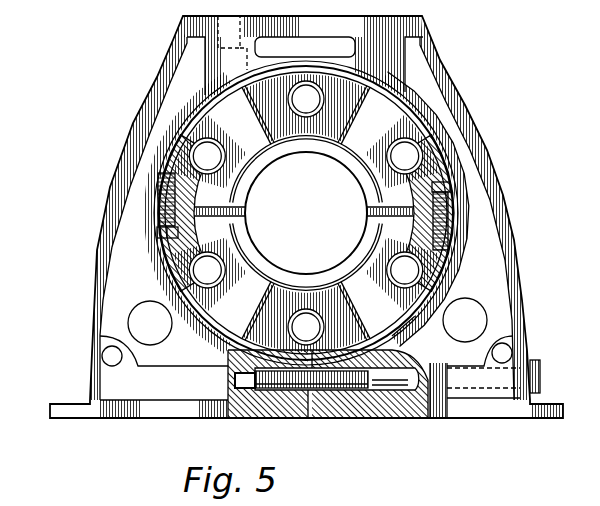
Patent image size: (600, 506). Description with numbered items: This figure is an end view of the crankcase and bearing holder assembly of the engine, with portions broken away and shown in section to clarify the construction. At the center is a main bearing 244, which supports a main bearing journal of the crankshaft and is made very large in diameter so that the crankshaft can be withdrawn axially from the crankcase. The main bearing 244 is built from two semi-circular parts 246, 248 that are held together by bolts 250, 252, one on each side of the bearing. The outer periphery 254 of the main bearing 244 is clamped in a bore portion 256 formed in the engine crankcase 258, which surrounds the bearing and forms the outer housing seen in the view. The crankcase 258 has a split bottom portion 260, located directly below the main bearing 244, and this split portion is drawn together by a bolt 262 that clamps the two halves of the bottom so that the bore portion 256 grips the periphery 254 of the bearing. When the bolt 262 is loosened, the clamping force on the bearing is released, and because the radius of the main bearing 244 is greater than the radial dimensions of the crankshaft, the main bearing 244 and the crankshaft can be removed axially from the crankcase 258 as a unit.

The main bearing 244 is at (411, 110).
The semi-circular part 246 is at (207, 109).
The semi-circular part 248 is at (424, 298).
The bolt 250 is at (166, 240).
The bolt 252 is at (440, 182).
The periphery 254 is at (356, 64).
The bore portion 256 is at (412, 302).
The crankcase 258 is at (504, 213).
The split bottom portion 260 is at (290, 420).
The bolt 262 is at (248, 388).